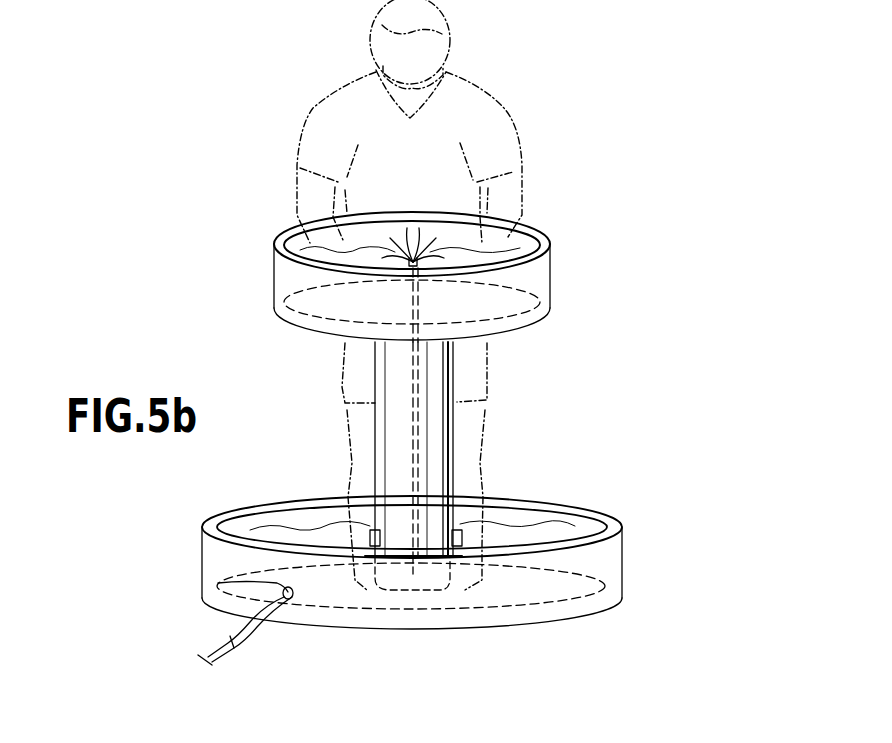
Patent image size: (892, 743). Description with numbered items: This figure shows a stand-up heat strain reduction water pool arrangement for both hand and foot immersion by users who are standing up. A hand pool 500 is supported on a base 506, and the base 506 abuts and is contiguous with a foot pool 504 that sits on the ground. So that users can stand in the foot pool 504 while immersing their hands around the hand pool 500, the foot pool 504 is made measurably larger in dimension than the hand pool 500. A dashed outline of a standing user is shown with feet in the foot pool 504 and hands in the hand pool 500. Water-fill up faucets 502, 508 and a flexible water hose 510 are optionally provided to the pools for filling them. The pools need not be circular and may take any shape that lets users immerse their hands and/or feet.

The hand pool 500 is at (530, 232).
The water-fill up faucet 502 is at (463, 523).
The foot pool 504 is at (518, 513).
The base 506 is at (436, 368).
The water-fill up faucet 508 is at (217, 575).
The flexible water hose 510 is at (233, 638).